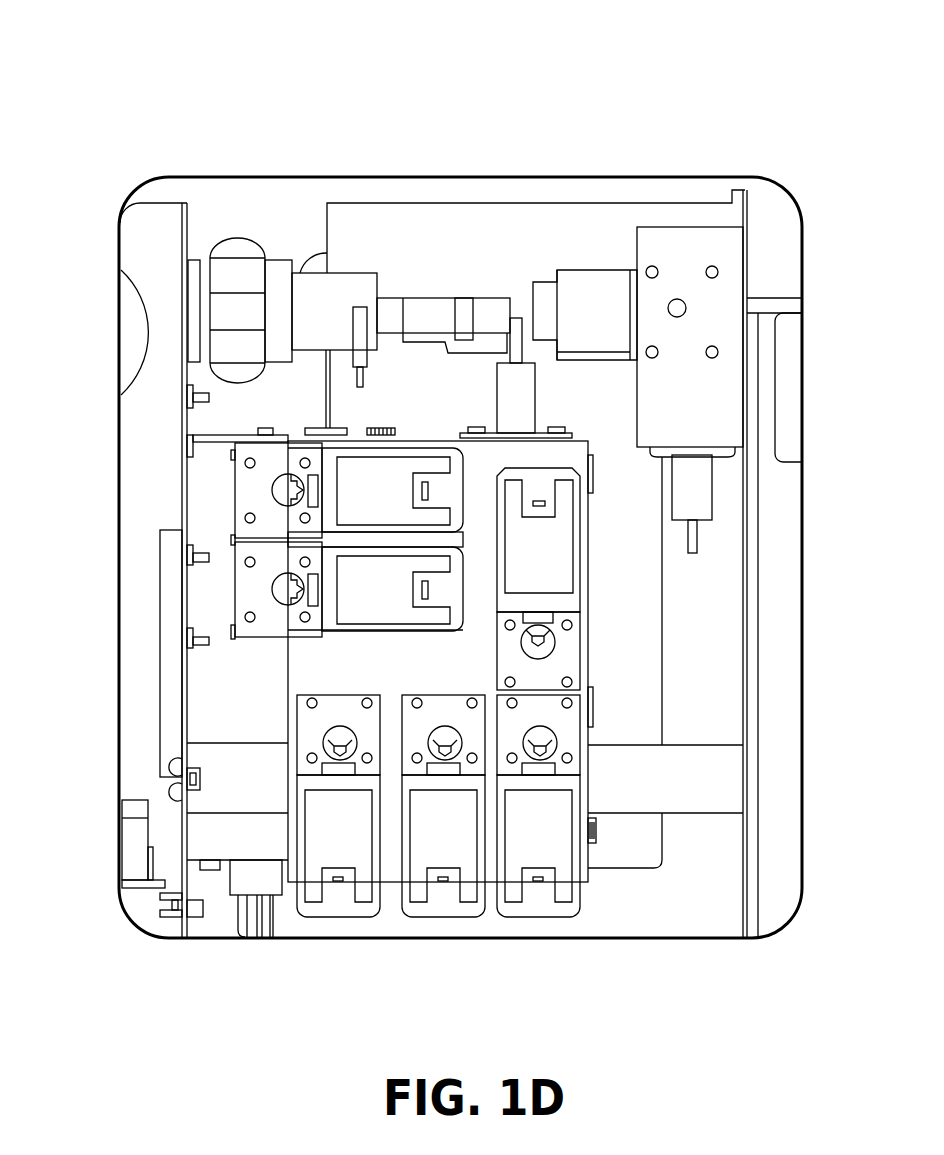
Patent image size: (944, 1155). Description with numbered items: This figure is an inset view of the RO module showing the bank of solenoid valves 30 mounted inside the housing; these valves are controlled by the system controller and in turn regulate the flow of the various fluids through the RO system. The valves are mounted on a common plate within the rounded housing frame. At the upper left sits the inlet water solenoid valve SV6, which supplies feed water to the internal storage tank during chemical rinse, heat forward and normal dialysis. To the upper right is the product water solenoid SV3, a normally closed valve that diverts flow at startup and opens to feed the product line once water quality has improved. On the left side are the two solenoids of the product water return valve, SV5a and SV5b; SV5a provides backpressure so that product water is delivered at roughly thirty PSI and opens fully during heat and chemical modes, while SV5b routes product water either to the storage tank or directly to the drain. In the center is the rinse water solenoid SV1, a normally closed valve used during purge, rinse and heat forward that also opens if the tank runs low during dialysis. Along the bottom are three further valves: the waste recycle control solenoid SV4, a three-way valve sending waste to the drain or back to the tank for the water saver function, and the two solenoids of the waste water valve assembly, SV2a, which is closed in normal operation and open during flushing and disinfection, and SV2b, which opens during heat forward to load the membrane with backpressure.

The solenoid valves 30 is at (189, 74).
The rinse water solenoid SV1 is at (538, 585).
The waste water solenoid SV2a is at (523, 727).
The waste water solenoid SV2b is at (428, 727).
The product water solenoid SV3 is at (690, 382).
The waste recycle control solenoid SV4 is at (323, 727).
The product water return solenoid SV5a is at (253, 591).
The product water return solenoid SV5b is at (253, 483).
The inlet water solenoid valve SV6 is at (240, 315).